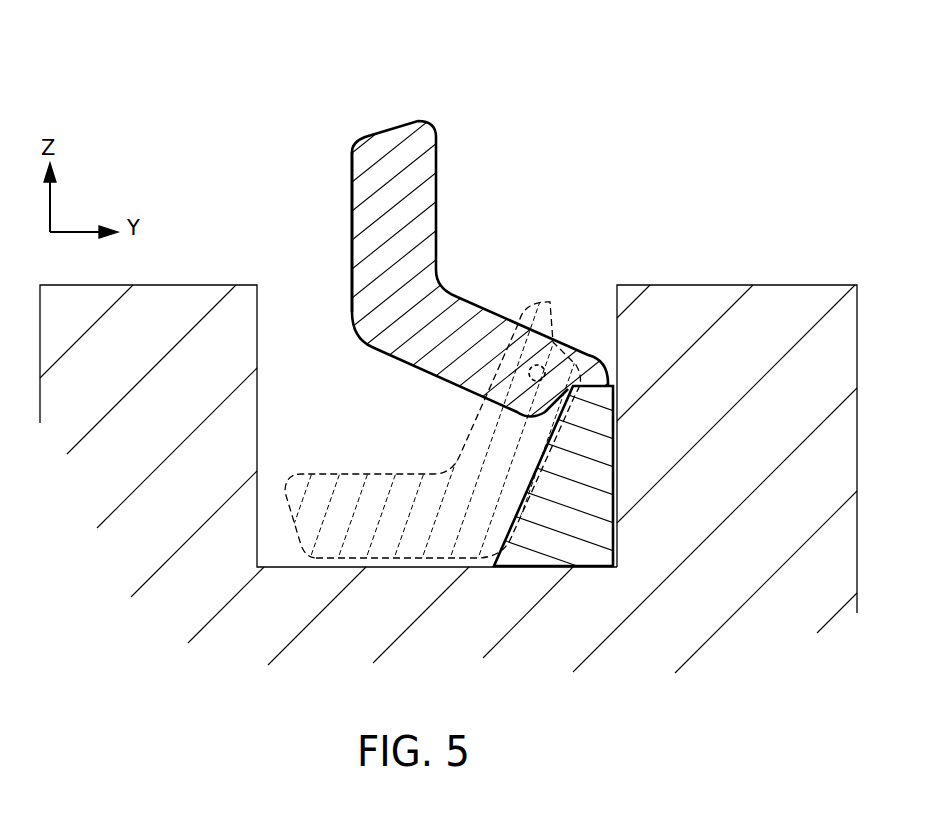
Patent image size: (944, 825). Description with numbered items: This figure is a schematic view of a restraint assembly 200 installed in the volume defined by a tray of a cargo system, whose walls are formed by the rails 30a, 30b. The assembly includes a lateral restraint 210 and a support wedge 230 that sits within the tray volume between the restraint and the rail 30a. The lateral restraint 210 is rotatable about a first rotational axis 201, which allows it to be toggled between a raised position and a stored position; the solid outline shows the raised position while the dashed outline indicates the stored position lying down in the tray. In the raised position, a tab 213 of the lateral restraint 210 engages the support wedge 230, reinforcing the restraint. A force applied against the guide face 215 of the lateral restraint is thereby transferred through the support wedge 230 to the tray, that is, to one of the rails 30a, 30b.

The restraint assembly 200 is at (392, 329).
The first rotational axis 201 is at (532, 381).
The lateral restraint 210 is at (370, 213).
The tab 213 is at (545, 305).
The guide face 215 is at (352, 195).
The support wedge 230 is at (597, 402).
The rail 30a is at (772, 298).
The rail 30b is at (222, 300).